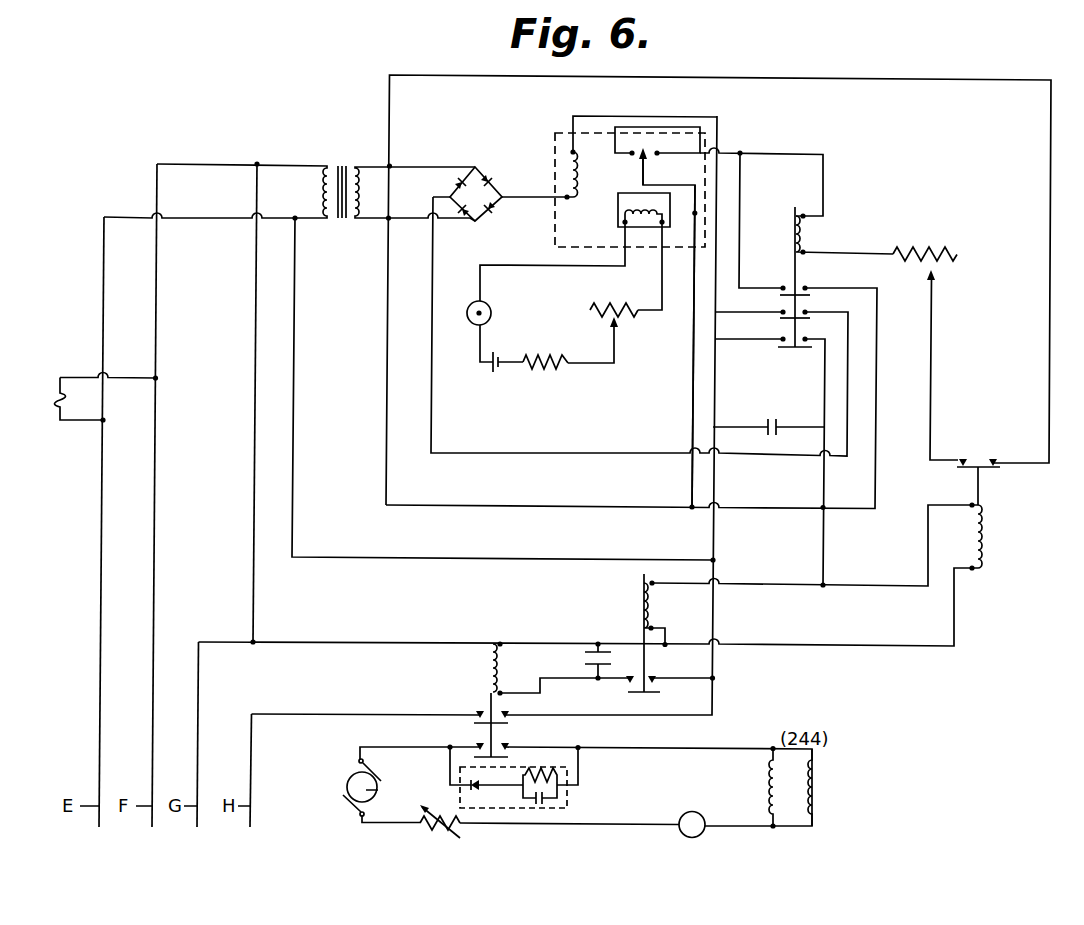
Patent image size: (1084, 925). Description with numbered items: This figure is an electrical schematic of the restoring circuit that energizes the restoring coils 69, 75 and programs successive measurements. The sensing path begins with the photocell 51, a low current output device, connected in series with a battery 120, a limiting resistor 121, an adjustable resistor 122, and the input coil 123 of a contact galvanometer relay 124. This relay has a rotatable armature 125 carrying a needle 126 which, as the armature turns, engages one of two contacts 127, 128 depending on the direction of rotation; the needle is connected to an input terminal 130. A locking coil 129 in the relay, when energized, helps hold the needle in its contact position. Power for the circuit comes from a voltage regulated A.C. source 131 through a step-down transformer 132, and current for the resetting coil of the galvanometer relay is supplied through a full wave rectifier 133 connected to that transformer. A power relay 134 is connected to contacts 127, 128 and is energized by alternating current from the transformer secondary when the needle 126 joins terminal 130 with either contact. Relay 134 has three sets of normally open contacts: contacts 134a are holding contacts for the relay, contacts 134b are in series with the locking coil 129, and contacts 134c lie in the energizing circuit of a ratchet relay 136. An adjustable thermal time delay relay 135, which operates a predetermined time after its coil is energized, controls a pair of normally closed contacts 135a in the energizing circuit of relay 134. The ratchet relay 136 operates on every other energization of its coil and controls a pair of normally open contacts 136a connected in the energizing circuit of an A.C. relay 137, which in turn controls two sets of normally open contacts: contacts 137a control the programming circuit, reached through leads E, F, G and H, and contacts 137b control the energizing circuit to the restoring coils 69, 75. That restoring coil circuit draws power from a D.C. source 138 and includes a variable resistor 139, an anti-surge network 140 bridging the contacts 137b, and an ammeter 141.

The photocell 51 is at (489, 307).
The restoring coil 69 is at (770, 789).
The restoring coil 75 is at (818, 790).
The battery 120 is at (495, 368).
The limiting resistor 121 is at (548, 368).
The adjustable resistor 122 is at (623, 311).
The input coil 123 is at (650, 223).
The contact galvanometer relay 124 is at (555, 237).
The rotatable armature 125 is at (641, 204).
The needle 126 is at (646, 169).
The contact 127 is at (629, 156).
The contact 128 is at (719, 171).
The locking coil 129 is at (566, 178).
The input terminal 130 is at (697, 213).
The voltage regulated A.C. source 131 is at (58, 400).
The step-down transformer 132 is at (344, 165).
The full wave rectifier 133 is at (484, 175).
The power relay 134 is at (800, 241).
The holding contacts 134a is at (808, 289).
The normally open contacts 134b is at (808, 313).
The normally open contacts 134c is at (810, 343).
The adjustable thermal time delay relay 135 is at (986, 538).
The normally closed contacts 135a is at (991, 463).
The ratchet relay 136 is at (640, 606).
The relay contact 136a is at (656, 681).
The A.C. relay 137 is at (488, 674).
The normally open contacts 137a is at (510, 718).
The normally open contacts 137b is at (510, 750).
The D.C. source 138 is at (378, 787).
The variable resistor 139 is at (428, 830).
The anti-surge network 140 is at (568, 802).
The ammeter 141 is at (695, 805).